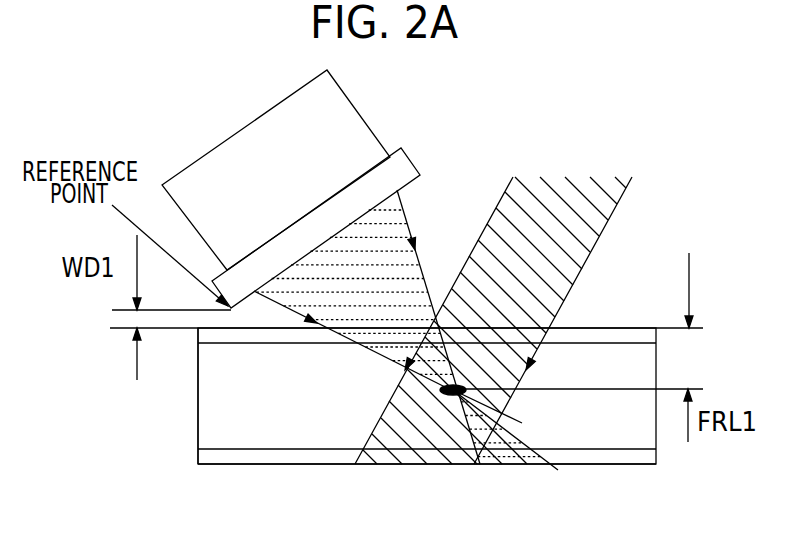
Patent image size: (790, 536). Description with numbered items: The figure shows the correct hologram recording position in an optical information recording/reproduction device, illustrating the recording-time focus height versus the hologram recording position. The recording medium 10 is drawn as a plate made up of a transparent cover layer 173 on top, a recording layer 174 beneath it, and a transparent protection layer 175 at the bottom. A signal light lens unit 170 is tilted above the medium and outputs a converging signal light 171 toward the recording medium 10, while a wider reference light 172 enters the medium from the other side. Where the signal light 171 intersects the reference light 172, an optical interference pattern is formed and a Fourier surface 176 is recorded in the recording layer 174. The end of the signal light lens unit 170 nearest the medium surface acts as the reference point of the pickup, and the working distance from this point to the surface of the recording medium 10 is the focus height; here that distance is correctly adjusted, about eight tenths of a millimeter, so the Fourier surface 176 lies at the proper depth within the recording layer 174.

The recording medium 10 is at (320, 465).
The signal light lens unit 170 is at (380, 140).
The signal light 171 is at (410, 232).
The reference light 172 is at (577, 278).
The transparent cover layer 173 is at (242, 337).
The recording layer 174 is at (212, 397).
The transparent protection layer 175 is at (223, 463).
The Fourier surface 176 is at (555, 467).